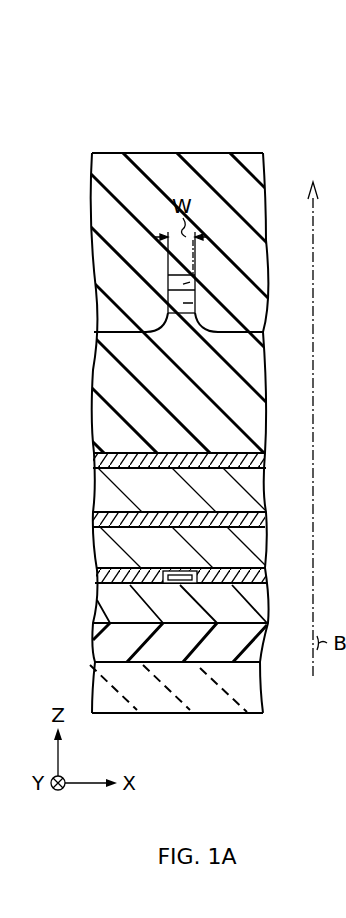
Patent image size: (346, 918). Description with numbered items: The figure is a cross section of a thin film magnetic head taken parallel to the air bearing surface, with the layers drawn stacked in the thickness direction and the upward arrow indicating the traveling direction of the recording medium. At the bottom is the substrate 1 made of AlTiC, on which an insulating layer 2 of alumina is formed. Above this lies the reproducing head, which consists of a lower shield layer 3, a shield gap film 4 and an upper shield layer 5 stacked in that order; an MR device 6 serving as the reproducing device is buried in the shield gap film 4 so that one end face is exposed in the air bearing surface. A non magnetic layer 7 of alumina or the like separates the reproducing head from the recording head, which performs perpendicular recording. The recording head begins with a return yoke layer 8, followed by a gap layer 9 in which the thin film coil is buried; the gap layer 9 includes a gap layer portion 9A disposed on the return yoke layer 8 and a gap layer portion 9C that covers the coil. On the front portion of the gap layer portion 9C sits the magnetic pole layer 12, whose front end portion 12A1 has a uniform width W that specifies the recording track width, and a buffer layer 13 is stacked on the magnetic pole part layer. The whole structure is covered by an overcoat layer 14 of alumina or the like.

The substrate 1 is at (100, 697).
The insulating layer 2 is at (120, 640).
The lower shield layer 3 is at (142, 610).
The shield gap film 4 is at (160, 575).
The upper shield layer 5 is at (202, 545).
The MR device 6 is at (183, 583).
The non magnetic layer 7 is at (223, 518).
The return yoke layer 8 is at (247, 527).
The gap layer 9 is at (185, 358).
The gap layer portion 9A is at (120, 453).
The gap layer portion 9C is at (141, 350).
The magnetic pole layer 12 is at (197, 315).
The front end portion 12A1 is at (249, 187).
The buffer layer 13 is at (195, 312).
The overcoat layer 14 is at (187, 153).